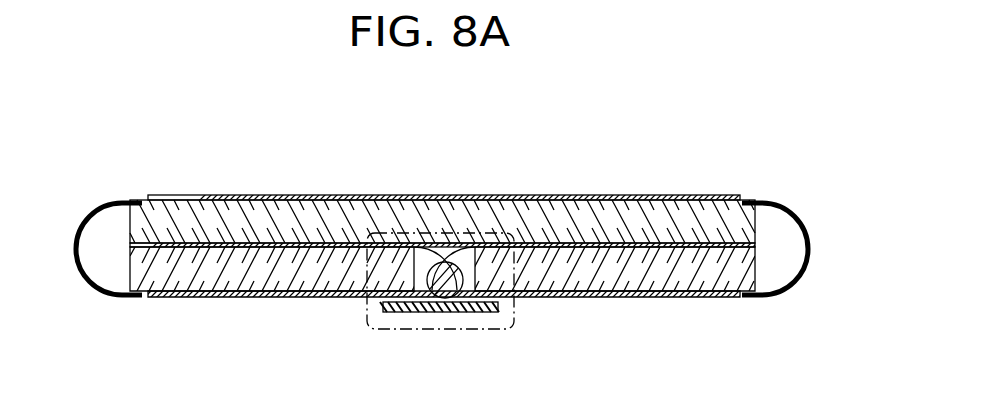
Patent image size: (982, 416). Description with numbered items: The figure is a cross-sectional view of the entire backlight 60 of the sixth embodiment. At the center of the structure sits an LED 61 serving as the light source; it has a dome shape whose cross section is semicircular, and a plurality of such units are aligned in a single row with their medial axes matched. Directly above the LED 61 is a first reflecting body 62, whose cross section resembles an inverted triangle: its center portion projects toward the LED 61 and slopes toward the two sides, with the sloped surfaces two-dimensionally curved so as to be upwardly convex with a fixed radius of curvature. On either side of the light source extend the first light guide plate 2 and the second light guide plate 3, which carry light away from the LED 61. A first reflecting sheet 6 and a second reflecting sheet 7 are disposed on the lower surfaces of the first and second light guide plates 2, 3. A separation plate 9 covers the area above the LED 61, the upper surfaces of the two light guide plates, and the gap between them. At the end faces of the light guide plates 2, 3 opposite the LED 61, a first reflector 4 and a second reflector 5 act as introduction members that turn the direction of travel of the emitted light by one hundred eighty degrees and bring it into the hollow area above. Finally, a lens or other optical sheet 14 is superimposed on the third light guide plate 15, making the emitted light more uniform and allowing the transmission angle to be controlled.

The backlight 60 is at (799, 173).
The third light guide plate 15 is at (208, 200).
The optical sheet 14 is at (296, 204).
The separation plate 9 is at (528, 247).
The first light guide plate 2 is at (262, 276).
The second light guide plate 3 is at (650, 276).
The first reflecting sheet 6 is at (203, 298).
The second reflecting sheet 7 is at (596, 294).
The first reflector 4 is at (92, 279).
The second reflector 5 is at (798, 279).
The LED 61 is at (440, 288).
The reflecting body 62 is at (447, 247).